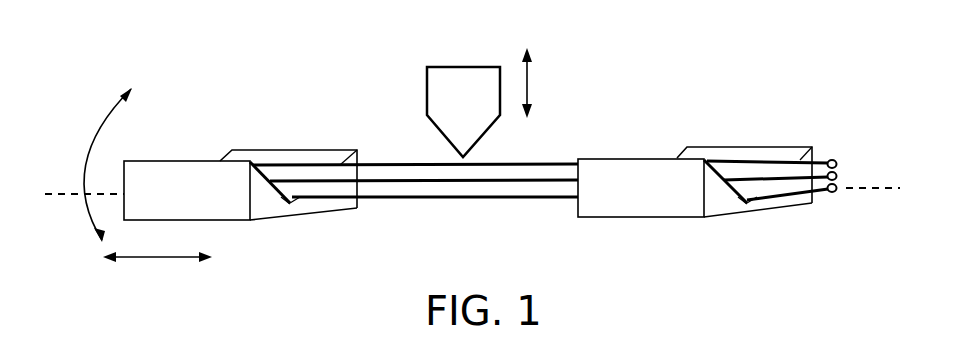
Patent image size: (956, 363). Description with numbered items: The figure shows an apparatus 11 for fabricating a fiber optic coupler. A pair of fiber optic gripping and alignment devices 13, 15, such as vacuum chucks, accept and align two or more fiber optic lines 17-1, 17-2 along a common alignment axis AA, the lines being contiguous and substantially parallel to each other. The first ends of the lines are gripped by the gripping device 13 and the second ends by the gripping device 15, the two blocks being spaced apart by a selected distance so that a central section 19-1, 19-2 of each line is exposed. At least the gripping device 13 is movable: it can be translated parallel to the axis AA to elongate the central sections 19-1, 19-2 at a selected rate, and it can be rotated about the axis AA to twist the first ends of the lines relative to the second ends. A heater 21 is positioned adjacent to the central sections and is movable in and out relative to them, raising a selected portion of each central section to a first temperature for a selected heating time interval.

The apparatus 11 is at (733, 48).
The fiber optic gripping and alignment device 13 is at (222, 198).
The fiber optic gripping and alignment device 15 is at (671, 193).
The fiber optic line 17-1 is at (782, 158).
The fiber optic line 17-2 is at (787, 195).
The central section 19-1 is at (518, 170).
The central section 19-2 is at (518, 188).
The FO line heater 21 is at (440, 80).